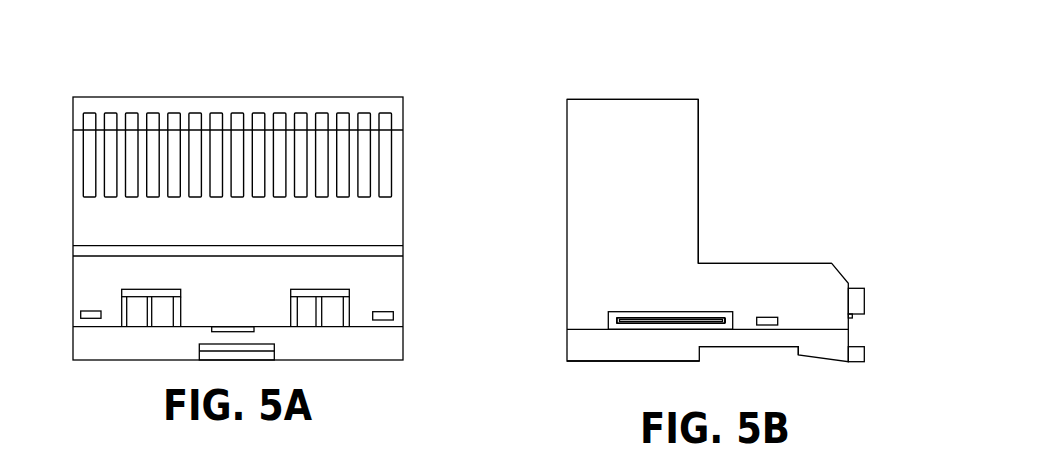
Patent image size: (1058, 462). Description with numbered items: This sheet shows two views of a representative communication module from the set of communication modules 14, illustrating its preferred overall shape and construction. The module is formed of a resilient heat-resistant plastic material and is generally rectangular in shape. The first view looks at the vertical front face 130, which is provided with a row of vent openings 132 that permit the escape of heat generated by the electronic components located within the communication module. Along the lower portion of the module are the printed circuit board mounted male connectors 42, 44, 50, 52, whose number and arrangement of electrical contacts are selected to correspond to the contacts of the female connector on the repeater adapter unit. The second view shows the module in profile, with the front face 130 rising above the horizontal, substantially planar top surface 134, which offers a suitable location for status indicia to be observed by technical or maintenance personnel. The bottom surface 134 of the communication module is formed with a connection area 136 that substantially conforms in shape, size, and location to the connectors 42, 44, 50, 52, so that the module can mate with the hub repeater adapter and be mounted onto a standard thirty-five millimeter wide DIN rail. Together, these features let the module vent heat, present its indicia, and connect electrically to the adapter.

In FIG. 5A, the set of communication modules 14 is at (230, 56).
In FIG. 5B, the set of communication modules 14 is at (668, 58).
In FIG. 5A, the vent openings 132 is at (306, 96).
In FIG. 5B, the vertical front face 130 is at (698, 132).
In FIG. 5B, the top surface 134 is at (798, 263).
In FIG. 5B, the connection area 136 is at (743, 356).
In FIG. 5B, the printed circuit board mounted male connector 42 is at (660, 300).
In FIG. 5B, the printed circuit board mounted male connector 44 is at (671, 321).
In FIG. 5B, the printed circuit board mounted male connector 50 is at (671, 321).
In FIG. 5B, the printed circuit board mounted male connector 52 is at (671, 321).